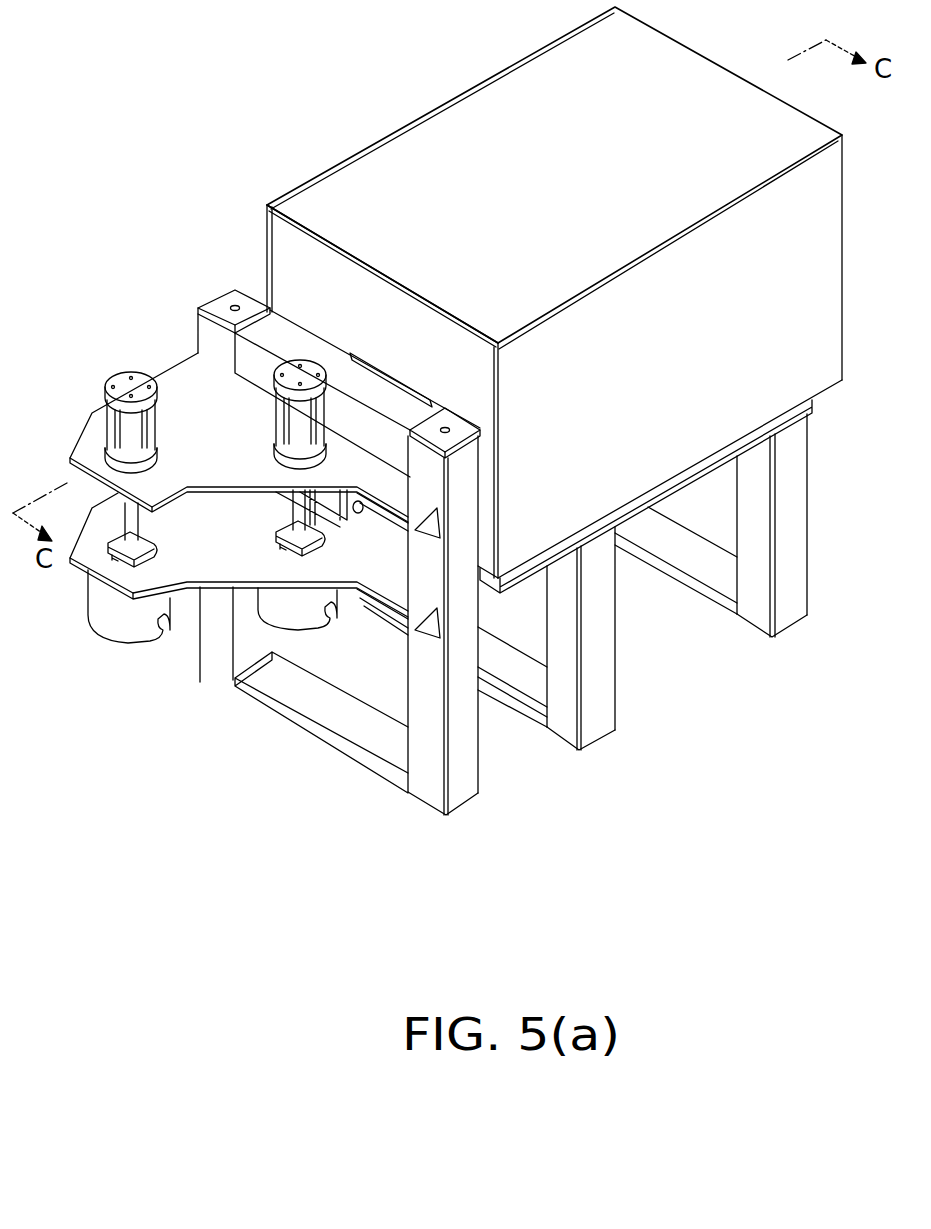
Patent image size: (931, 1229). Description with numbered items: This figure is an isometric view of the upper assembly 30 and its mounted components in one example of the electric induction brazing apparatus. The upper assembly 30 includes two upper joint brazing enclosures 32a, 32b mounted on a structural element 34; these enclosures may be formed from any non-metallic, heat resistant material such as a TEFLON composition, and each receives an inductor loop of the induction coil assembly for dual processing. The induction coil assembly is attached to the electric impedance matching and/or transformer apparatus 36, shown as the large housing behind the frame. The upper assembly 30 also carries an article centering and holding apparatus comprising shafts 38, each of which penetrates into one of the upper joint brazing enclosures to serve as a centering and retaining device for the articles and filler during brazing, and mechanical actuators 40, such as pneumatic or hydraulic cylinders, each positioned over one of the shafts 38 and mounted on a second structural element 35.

The upper assembly 30 is at (72, 345).
The upper joint brazing enclosure 32a is at (118, 623).
The upper joint brazing enclosure 32b is at (292, 612).
The structural element 34 is at (209, 535).
The structural element 35 is at (228, 448).
The electric impedance matching and/or transformer apparatus 36 is at (589, 171).
The shaft 38 is at (133, 520).
The mechanical actuator 40 is at (293, 377).